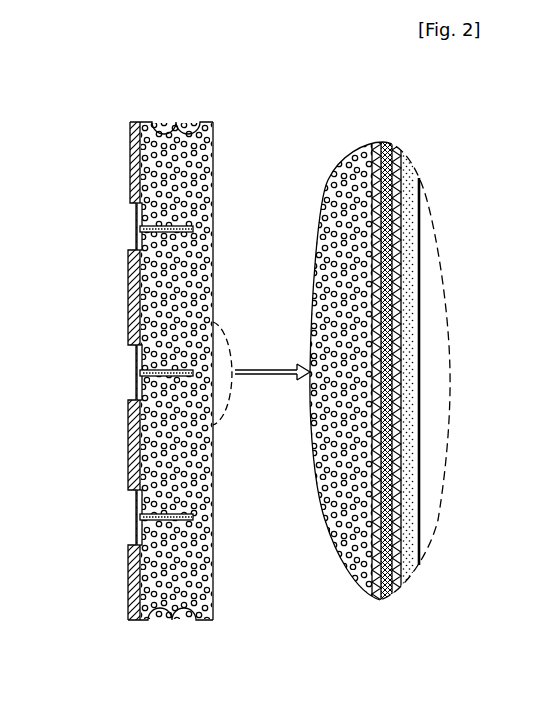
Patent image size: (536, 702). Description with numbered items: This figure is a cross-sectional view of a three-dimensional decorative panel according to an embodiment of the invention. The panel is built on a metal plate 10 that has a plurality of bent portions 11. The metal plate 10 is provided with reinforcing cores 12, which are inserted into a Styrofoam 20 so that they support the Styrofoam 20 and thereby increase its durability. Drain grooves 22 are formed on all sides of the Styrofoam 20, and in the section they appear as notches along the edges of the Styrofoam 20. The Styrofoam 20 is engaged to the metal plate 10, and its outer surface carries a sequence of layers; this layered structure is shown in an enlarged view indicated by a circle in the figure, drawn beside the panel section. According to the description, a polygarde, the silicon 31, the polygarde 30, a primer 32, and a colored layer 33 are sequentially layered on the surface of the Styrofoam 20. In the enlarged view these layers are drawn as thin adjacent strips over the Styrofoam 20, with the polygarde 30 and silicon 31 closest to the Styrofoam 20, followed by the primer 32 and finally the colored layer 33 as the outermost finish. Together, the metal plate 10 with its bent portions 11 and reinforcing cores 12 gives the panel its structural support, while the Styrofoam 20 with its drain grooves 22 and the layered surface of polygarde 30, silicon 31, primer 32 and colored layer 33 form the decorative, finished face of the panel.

The metal plate 10 is at (137, 590).
The bent portions 11 is at (131, 488).
The reinforcing core 12 is at (190, 224).
The Styrofoam 20 is at (333, 463).
The drain grooves 22 is at (165, 122).
The polygarde 30 is at (386, 371).
The silicon 31 is at (383, 602).
The primer 32 is at (400, 580).
The colored layer 33 is at (415, 567).